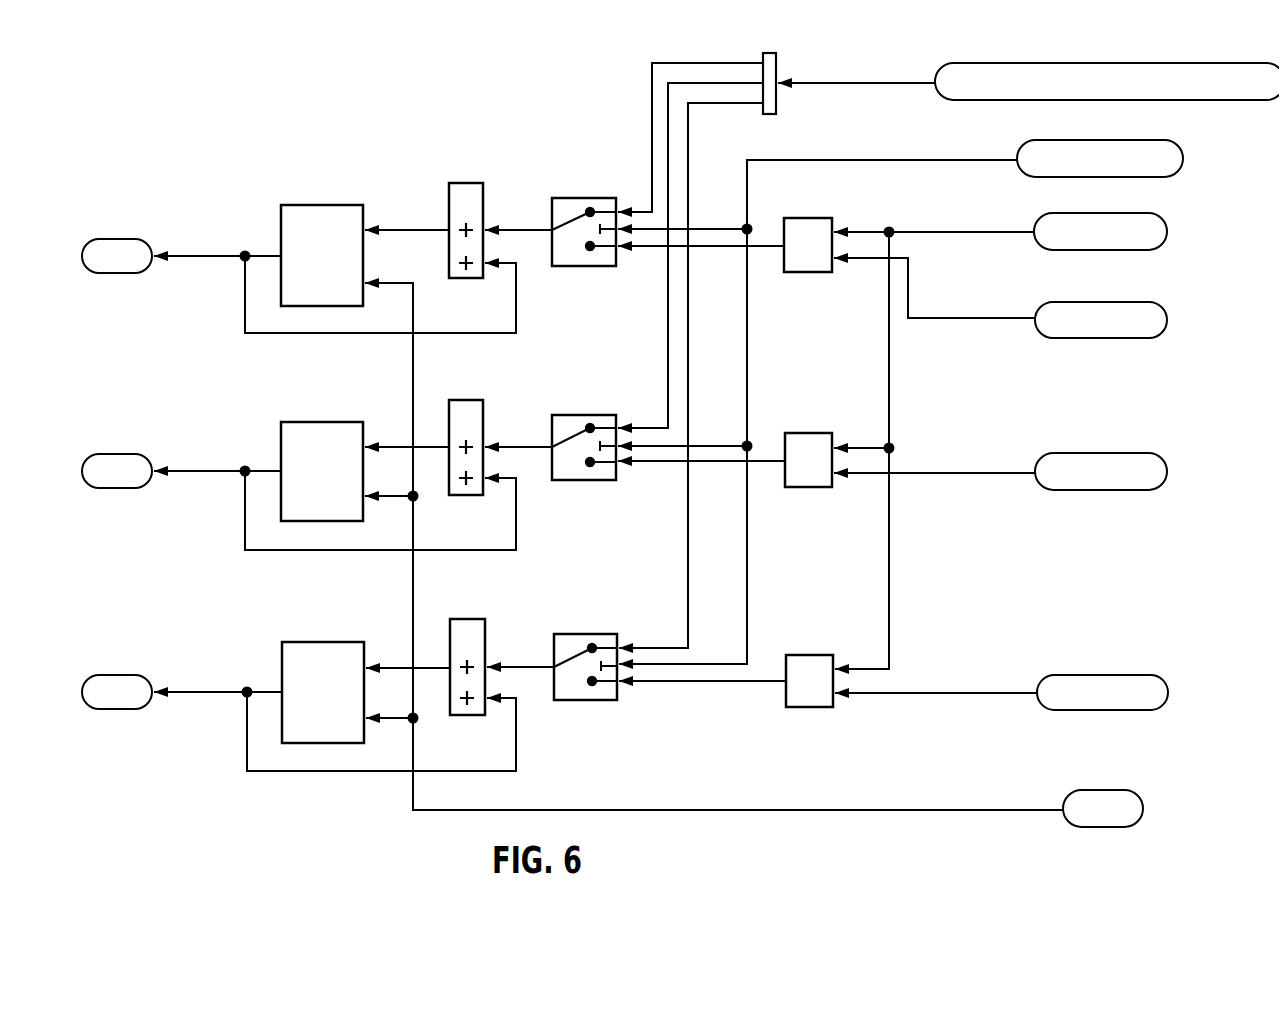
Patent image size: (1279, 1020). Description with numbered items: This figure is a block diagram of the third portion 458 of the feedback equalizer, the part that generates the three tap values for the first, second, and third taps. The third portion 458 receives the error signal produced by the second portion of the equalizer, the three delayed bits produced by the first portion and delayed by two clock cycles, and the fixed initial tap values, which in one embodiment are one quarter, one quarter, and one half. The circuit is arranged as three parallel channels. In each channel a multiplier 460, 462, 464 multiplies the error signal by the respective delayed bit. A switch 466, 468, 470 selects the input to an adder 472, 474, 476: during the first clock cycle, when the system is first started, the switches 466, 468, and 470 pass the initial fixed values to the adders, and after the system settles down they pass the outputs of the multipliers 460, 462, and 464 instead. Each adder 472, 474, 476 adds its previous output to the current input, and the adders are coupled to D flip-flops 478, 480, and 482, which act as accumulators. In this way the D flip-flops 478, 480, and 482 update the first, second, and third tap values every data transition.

The third portion of the FBE 458 is at (873, 869).
The multiplier 460 is at (800, 272).
The multiplier 462 is at (800, 487).
The multiplier 464 is at (800, 707).
The switch 466 is at (590, 198).
The switch 468 is at (590, 415).
The switch 470 is at (591, 634).
The adder 472 is at (467, 183).
The adder 474 is at (467, 400).
The adder 476 is at (467, 619).
The D flip-flop 478 is at (280, 228).
The D flip-flop 480 is at (280, 445).
The D flip-flop 482 is at (281, 665).